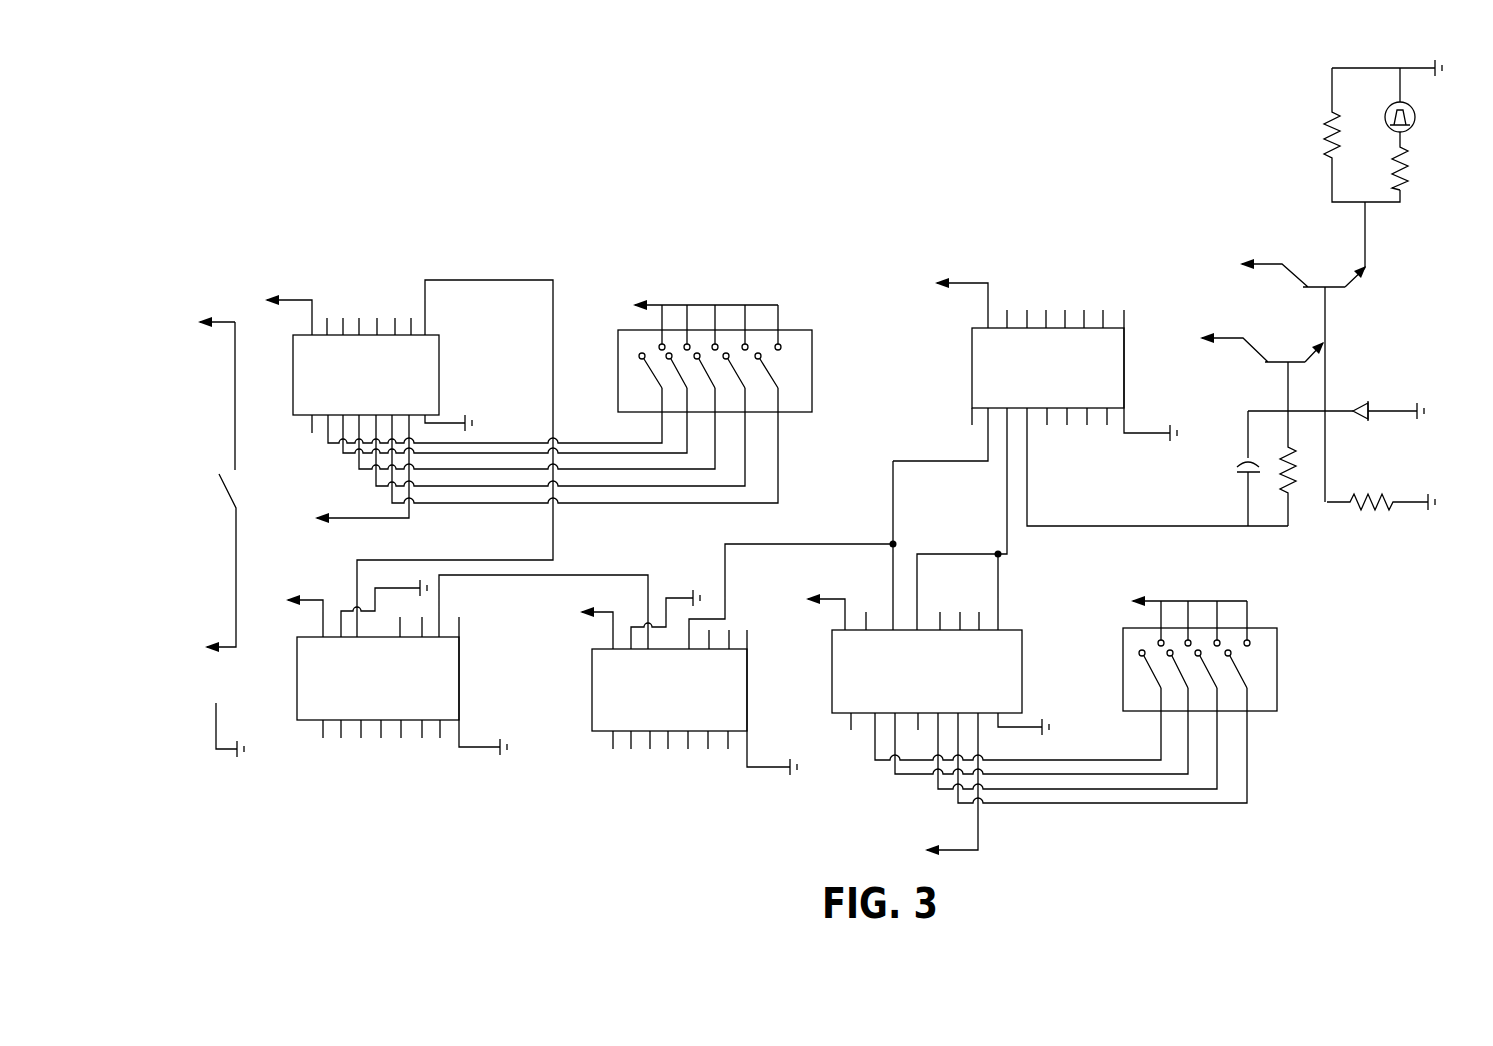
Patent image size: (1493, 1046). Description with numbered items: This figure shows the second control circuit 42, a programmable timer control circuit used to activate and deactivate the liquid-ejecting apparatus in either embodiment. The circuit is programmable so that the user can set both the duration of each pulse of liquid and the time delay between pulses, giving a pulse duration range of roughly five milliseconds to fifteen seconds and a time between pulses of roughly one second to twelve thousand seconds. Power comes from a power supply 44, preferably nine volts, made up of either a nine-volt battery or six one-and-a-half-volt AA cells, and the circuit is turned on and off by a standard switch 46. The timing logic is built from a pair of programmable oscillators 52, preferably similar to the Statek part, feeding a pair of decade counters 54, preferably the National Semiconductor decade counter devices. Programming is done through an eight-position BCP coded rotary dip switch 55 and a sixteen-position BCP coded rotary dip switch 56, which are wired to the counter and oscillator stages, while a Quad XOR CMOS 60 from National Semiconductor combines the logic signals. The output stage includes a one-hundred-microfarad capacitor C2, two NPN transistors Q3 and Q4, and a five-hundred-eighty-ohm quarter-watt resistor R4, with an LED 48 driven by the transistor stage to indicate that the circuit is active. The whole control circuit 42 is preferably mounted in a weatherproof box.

The second control circuit 42 is at (636, 206).
The power supply 44 is at (214, 672).
The switch 46 is at (220, 466).
The LED 48 is at (1415, 114).
The programmable oscillator 52 is at (439, 386).
The decade counter 54 is at (397, 692).
The 8 position BCP coded rotary dip switch 55 is at (1277, 664).
The 16 position BCP coded rotary dip switch 56 is at (812, 367).
The Quad XOR CMOS 60 is at (1068, 381).
The NPN transistor Q3 is at (1262, 419).
The NPN transistor Q4 is at (1303, 352).
The capacitor C2 is at (1224, 468).
The resistor R4 is at (1381, 526).